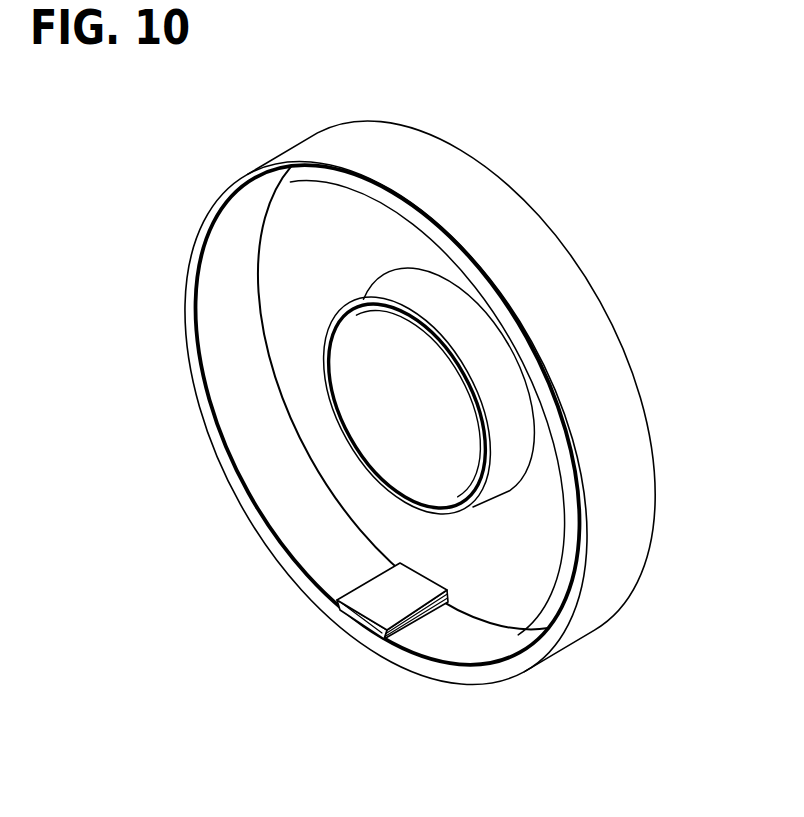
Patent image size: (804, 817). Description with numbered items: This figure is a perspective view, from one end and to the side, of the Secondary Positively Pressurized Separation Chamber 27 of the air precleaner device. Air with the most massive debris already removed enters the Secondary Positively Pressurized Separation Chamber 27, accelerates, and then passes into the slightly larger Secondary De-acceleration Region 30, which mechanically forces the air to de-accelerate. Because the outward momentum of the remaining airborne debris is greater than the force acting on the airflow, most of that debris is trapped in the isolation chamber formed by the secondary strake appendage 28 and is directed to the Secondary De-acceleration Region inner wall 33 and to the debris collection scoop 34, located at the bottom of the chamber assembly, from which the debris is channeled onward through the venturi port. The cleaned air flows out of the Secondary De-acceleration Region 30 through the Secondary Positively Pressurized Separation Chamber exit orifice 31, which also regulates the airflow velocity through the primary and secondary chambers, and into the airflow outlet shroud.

The Secondary Positively Pressurized Separation Chamber 27 is at (333, 150).
The secondary strake appendage 28 is at (498, 482).
The Secondary De-acceleration Region 30 is at (217, 366).
The Secondary Positively Pressurized Separation Chamber exit orifice 31 is at (407, 416).
The Secondary De-acceleration Region inner wall 33 is at (353, 582).
The Secondary De-acceleration Region debris collection scoop 34 is at (383, 617).